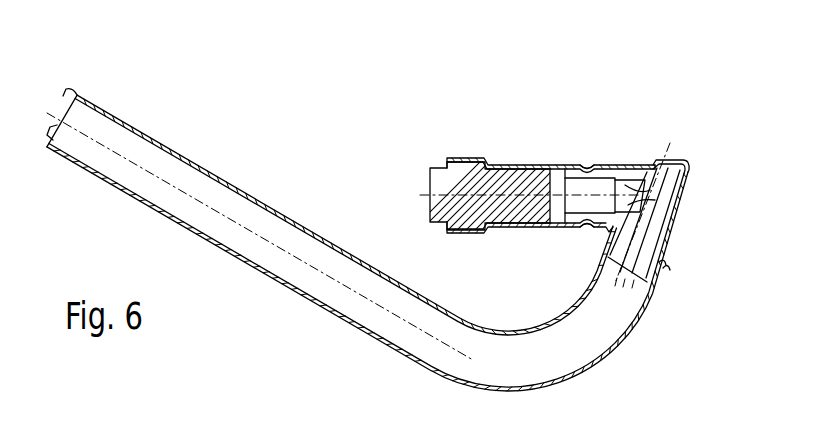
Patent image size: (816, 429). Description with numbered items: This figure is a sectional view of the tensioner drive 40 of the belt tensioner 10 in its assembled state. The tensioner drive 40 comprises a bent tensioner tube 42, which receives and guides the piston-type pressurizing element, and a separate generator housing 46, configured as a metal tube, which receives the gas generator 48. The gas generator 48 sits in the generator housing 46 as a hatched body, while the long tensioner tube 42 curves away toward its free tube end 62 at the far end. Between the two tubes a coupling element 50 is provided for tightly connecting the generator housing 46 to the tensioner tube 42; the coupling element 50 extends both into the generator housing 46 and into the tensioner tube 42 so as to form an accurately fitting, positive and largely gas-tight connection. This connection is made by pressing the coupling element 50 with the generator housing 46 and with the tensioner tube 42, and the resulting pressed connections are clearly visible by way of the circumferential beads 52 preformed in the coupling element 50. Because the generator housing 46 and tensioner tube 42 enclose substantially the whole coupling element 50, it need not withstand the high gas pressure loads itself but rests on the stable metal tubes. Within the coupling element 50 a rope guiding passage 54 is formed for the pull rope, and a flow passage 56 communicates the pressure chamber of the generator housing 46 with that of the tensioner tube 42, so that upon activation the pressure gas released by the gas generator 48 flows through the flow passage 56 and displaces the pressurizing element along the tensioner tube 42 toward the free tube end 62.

The belt tensioner 10 is at (632, 105).
The tensioner drive 40 is at (383, 205).
The tensioner tube 42 is at (332, 313).
The generator housing 46 is at (490, 158).
The gas generator 48 is at (430, 182).
The coupling element 50 is at (680, 186).
The circumferential beads 52 is at (585, 157).
The rope guiding passage 54 is at (655, 211).
The flow passage 56 is at (627, 243).
The free tube end 62 is at (60, 106).